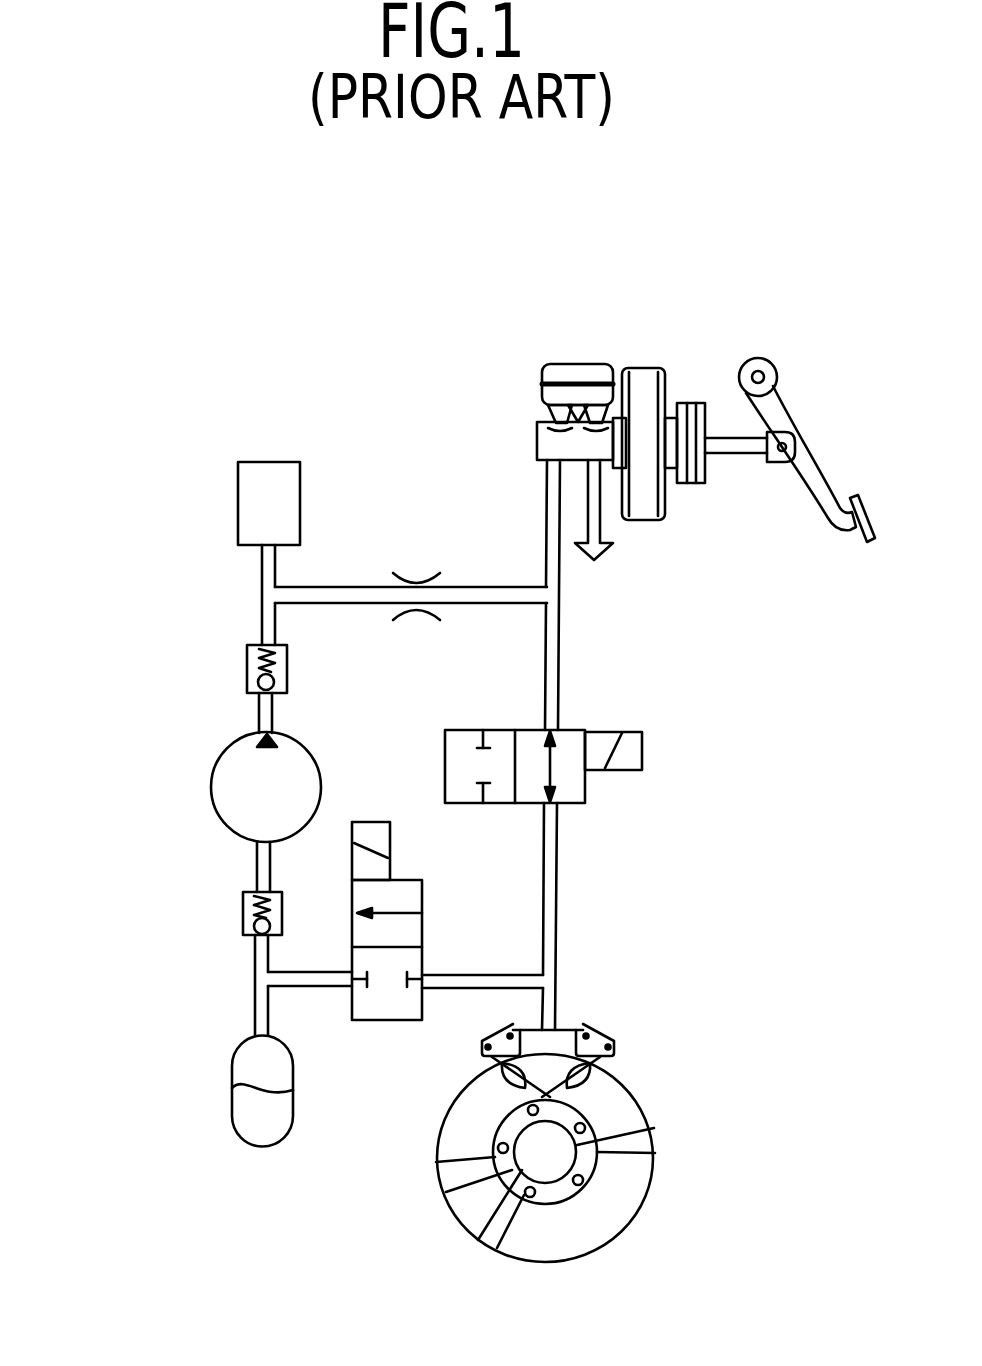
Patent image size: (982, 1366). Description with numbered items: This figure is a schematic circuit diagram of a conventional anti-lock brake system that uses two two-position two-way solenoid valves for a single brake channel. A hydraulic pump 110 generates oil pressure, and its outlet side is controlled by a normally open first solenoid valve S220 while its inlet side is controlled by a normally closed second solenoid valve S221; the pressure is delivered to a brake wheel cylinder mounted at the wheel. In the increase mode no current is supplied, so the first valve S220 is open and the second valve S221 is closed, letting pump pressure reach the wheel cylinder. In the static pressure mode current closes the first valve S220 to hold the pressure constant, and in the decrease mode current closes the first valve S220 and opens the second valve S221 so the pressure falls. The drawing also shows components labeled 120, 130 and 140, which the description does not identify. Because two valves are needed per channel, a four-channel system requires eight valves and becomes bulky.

The hydraulic pump 110 is at (228, 1105).
The pump 120 is at (222, 755).
The reservoir 130 is at (277, 462).
The master cylinder with booster and brake pedal 140 is at (622, 340).
The first 2/2 solenoid valve S220 is at (595, 772).
The second 2/2 solenoid valve S221 is at (382, 1020).